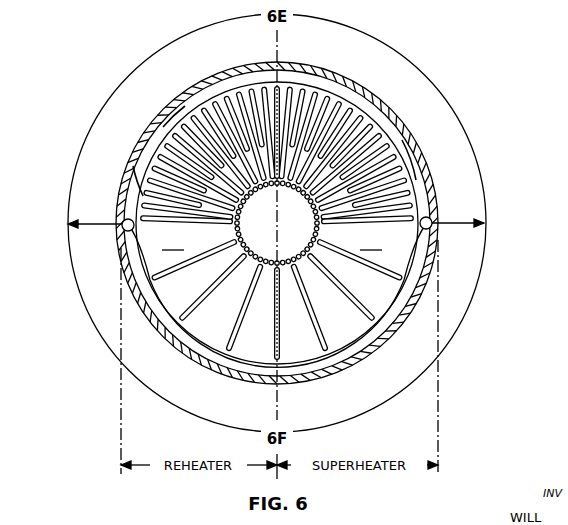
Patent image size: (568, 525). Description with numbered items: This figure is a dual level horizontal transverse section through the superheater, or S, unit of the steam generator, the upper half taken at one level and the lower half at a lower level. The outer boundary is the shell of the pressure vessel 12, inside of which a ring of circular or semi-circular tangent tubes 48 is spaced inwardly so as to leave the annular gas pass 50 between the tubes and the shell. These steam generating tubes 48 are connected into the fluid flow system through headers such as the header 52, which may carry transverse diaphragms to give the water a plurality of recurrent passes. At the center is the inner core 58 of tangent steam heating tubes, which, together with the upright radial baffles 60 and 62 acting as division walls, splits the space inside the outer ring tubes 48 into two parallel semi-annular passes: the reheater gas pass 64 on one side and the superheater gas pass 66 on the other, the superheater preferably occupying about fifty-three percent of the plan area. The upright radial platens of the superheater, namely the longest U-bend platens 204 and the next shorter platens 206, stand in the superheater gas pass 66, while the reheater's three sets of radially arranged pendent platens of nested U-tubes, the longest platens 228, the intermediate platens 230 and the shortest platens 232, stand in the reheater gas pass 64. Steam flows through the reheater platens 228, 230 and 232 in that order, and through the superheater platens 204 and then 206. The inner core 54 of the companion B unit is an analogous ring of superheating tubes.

The pressure vessel 12 is at (333, 80).
The tangent tubes 48 is at (175, 127).
The annular gas pass 50 is at (293, 81).
The header 52 is at (122, 225).
The inner core 54 is at (432, 222).
The inner core 58 is at (306, 204).
The upright radial baffle 60 is at (273, 312).
The upright radial baffle 62 is at (264, 90).
The reheater gas pass 64 is at (173, 241).
The superheater gas pass 66 is at (371, 241).
The longest superheater platens 204 is at (342, 298).
The shorter superheater platens 206 is at (390, 198).
The longest reheater platens 228 is at (212, 258).
The intermediate reheater platens 230 is at (143, 177).
The shortest reheater platens 232 is at (208, 100).